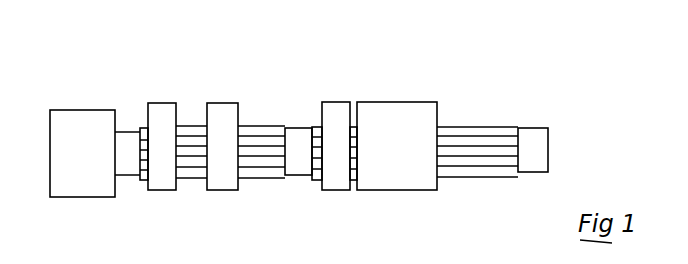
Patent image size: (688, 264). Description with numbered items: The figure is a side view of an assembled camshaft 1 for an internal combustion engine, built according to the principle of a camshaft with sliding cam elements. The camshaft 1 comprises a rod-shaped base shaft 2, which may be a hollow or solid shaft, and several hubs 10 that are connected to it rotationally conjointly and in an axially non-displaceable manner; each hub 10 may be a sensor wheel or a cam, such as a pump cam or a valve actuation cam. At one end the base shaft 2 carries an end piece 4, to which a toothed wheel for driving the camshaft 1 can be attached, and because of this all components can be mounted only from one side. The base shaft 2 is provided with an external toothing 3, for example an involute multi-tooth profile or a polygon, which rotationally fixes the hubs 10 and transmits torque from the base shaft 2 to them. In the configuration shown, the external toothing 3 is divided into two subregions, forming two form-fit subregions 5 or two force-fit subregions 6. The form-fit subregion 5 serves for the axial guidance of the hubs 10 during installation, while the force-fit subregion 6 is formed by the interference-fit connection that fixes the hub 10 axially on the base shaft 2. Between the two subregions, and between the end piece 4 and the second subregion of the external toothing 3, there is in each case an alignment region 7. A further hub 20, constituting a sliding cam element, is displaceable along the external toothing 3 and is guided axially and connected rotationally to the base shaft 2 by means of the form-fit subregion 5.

The assembled camshaft 1 is at (79, 82).
The base shaft 2 is at (533, 133).
The external toothing 3 is at (278, 107).
The end piece 4 is at (73, 189).
The form-fit subregion 5 is at (257, 179).
The force-fit subregion 6 is at (257, 179).
The alignment region 7 is at (125, 138).
The hub 10 is at (165, 111).
The further hub 20 is at (423, 112).